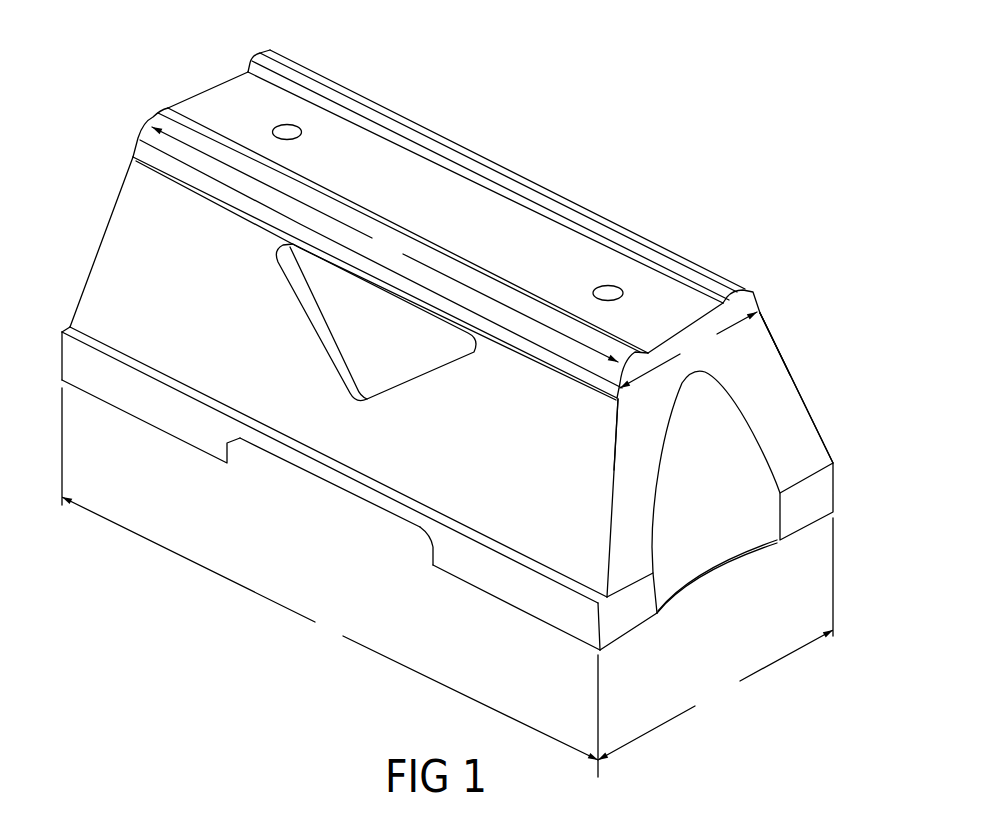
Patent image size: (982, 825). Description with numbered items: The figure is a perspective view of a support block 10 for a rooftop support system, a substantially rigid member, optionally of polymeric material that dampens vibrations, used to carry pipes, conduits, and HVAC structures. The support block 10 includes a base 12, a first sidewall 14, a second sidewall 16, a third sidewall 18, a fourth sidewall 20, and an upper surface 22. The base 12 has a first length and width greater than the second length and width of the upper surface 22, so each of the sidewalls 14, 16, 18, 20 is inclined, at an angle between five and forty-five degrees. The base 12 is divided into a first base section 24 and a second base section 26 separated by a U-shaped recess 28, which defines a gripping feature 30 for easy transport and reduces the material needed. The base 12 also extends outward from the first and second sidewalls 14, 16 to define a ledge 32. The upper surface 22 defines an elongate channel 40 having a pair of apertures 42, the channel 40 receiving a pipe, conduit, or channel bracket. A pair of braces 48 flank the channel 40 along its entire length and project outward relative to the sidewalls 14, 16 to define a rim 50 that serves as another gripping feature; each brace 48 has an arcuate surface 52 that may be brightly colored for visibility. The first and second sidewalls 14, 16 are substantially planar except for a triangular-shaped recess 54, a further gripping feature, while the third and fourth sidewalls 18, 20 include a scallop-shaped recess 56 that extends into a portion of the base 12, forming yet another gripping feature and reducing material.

The support block 10 is at (584, 86).
The base 12 is at (545, 627).
The first sidewall 14 is at (534, 473).
The second sidewall 16 is at (790, 386).
The third sidewall 18 is at (777, 422).
The fourth sidewall 20 is at (103, 240).
The upper surface 22 is at (680, 254).
The first base section 24 is at (473, 588).
The second base section 26 is at (167, 436).
The U-shaped recess 28 is at (330, 483).
The gripping feature 30 is at (377, 507).
The ledge 32 is at (106, 348).
The elongate channel 40 is at (387, 162).
The apertures 42 is at (287, 130).
The braces 48 is at (613, 377).
The rim 50 is at (623, 403).
The arcuate surface 52 is at (280, 58).
The triangular-shaped recess 54 is at (386, 342).
The scallop-shaped recess 56 is at (722, 506).